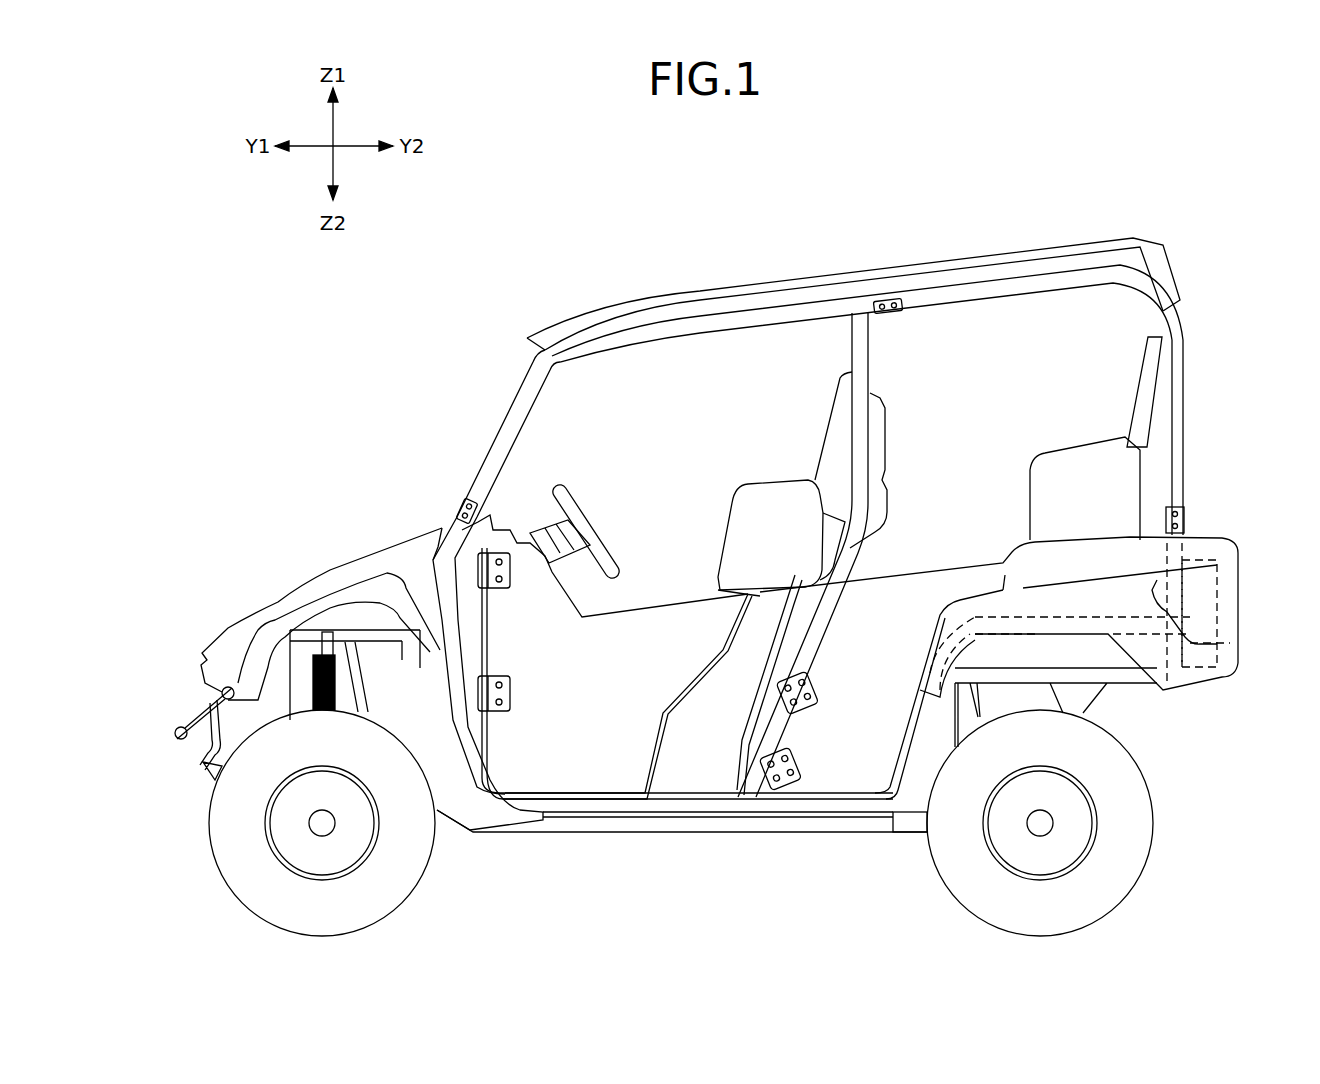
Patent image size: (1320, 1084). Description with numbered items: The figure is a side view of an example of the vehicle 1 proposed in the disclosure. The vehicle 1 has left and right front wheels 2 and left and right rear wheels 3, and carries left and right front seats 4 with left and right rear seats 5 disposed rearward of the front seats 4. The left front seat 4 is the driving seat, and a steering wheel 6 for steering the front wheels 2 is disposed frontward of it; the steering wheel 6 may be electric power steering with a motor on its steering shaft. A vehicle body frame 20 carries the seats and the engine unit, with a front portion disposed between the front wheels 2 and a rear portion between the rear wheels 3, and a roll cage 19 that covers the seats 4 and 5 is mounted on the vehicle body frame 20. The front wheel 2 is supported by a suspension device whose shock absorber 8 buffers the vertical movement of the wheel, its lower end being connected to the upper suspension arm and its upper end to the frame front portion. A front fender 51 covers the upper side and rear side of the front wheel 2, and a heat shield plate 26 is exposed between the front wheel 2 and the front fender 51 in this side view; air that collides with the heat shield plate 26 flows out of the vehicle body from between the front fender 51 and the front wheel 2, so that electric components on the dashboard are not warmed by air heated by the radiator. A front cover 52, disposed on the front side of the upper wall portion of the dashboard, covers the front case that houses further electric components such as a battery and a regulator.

The vehicle 1 is at (1075, 160).
The front wheels 2 is at (210, 852).
The rear wheels 3 is at (1150, 860).
The front seats 4 is at (812, 417).
The rear seats 5 is at (1116, 375).
The steering wheel 6 is at (578, 502).
The shock absorber 8 is at (306, 668).
The roll cage 19 is at (710, 323).
The vehicle body frame 20 is at (590, 836).
The heat shield plate 26 is at (367, 668).
The front fender 51 is at (327, 598).
The front cover 52 is at (372, 545).